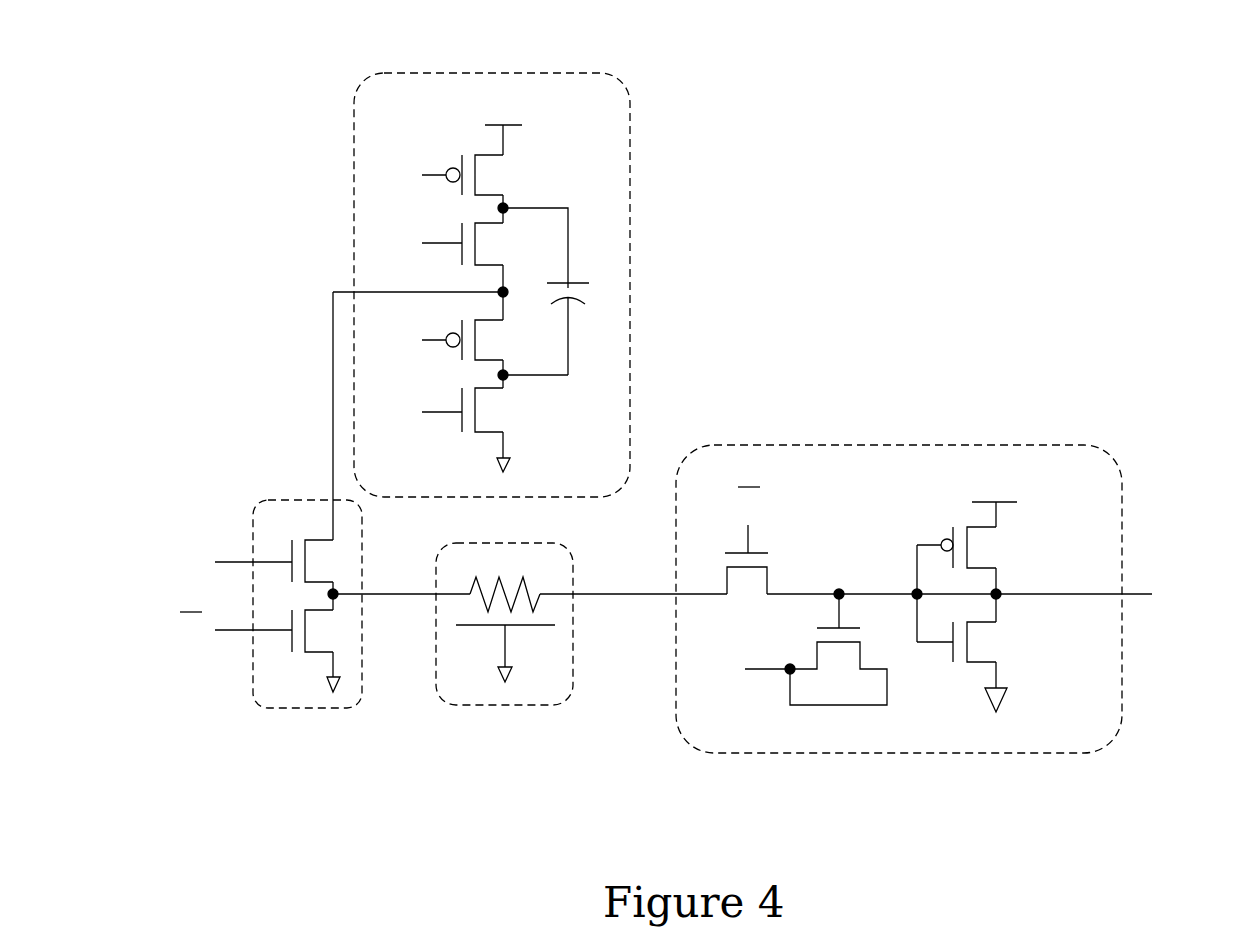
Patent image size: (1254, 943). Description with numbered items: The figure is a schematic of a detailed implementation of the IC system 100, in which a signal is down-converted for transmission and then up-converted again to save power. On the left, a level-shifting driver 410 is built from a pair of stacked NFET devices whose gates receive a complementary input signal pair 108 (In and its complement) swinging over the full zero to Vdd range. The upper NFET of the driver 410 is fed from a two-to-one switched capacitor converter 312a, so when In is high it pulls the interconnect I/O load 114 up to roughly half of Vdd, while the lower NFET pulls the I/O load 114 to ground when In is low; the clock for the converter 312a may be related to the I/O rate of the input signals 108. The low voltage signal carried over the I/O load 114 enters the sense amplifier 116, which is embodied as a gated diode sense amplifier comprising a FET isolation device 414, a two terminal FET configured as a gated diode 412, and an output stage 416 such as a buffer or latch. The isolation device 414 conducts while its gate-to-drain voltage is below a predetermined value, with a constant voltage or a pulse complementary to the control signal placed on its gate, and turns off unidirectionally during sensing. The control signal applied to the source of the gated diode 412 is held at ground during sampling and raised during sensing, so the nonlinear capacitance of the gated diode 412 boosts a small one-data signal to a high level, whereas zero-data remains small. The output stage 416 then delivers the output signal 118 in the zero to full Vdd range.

The IC system 100 is at (188, 83).
The converter 312a is at (360, 143).
The level-shifting driver 410 is at (260, 515).
The input signal pair 108 is at (135, 558).
The interconnect I/O load 114 is at (487, 705).
The sense amplifier 116 is at (882, 460).
The FET isolation device 414 is at (767, 582).
The gated diode 412 is at (815, 652).
The output stage 416 is at (993, 577).
The output signal 118 is at (1128, 597).